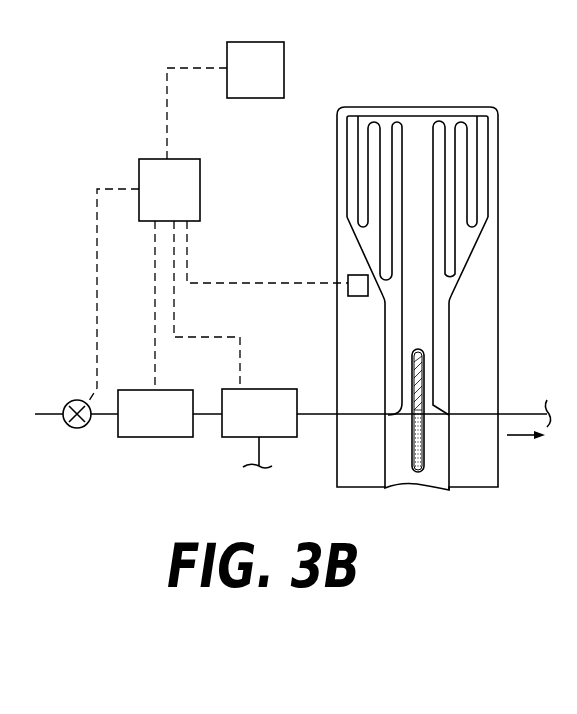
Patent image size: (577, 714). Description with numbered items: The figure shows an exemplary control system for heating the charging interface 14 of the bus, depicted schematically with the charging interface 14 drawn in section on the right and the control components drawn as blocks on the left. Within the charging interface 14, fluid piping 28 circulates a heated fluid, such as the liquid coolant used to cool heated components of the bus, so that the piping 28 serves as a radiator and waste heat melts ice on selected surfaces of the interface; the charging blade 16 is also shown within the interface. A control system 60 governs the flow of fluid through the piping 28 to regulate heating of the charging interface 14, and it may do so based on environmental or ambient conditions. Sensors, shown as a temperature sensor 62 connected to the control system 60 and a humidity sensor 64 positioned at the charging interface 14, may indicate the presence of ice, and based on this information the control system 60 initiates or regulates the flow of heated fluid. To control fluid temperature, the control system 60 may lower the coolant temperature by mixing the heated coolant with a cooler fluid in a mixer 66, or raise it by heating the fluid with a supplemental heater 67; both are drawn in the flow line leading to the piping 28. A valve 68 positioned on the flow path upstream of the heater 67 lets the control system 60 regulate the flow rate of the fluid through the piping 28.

The charging interface 14 is at (512, 126).
The charging blade 16 is at (425, 366).
The fluid piping 28 is at (466, 178).
The control system 60 is at (159, 200).
The temperature sensor 62 is at (246, 81).
The humidity sensor 64 is at (350, 297).
The mixer 66 is at (249, 426).
The supplemental heater 67 is at (145, 426).
The valve 68 is at (72, 401).